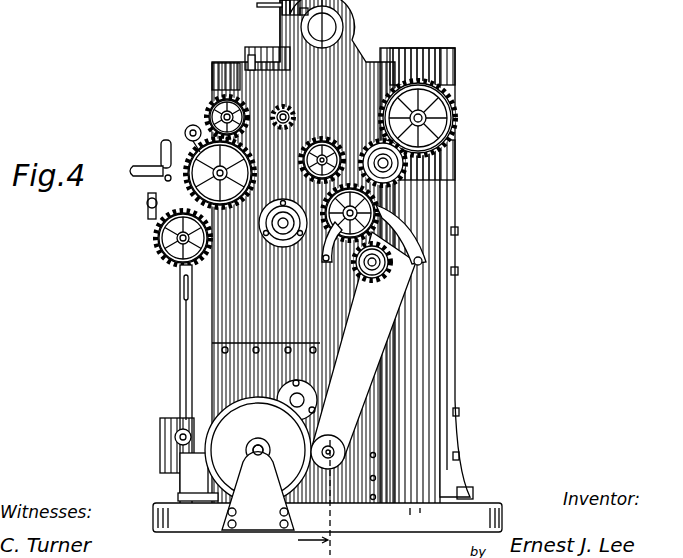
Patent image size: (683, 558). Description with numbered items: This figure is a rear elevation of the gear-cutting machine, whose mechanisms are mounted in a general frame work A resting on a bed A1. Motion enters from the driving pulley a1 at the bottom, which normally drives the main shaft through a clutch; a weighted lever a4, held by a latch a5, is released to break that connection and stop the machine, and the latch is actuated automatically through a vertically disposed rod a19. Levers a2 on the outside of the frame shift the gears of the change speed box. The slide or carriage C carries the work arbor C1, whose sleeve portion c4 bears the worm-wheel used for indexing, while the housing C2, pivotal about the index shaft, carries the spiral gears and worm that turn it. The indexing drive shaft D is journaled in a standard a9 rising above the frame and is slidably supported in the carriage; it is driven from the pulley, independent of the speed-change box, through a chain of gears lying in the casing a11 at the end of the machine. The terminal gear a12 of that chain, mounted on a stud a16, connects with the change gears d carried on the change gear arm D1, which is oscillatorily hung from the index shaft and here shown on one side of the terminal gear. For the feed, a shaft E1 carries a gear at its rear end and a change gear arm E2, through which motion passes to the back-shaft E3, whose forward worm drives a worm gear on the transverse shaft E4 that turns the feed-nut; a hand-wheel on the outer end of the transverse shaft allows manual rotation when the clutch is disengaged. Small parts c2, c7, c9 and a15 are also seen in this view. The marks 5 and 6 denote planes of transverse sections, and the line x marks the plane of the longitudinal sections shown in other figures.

The slide (carriage) C is at (333, 53).
The work arbor C1 is at (361, 6).
The housing C2 is at (242, 63).
The casing pin c2 is at (284, 16).
The sleeve portion of work arbor c4 is at (216, 78).
The casing rod c7 is at (262, 10).
The pivot pin c9 is at (166, 179).
The section line 5- 5 is at (447, 5).
The section line 6- 6 is at (219, 5).
The frame work A is at (427, 372).
The bed A1 is at (384, 524).
The driving pulley a1 is at (247, 455).
The levers a2 is at (193, 308).
The weighted lever a4 is at (180, 458).
The latch (trip device) a5 is at (175, 440).
The standard a9 is at (455, 147).
The casing a11 is at (363, 345).
The terminal gear a12 is at (392, 275).
The idler disc a15 is at (282, 232).
The stud a16 is at (392, 250).
The vertically disposed rod a19 is at (186, 376).
The indexing drive shaft D is at (428, 120).
The change gear arm D1 is at (385, 206).
The gears (change gears) d is at (425, 182).
The shaft E1 is at (212, 105).
The change gear arm E2 is at (186, 131).
The back-shaft E3 is at (158, 245).
The transverse shaft E4 is at (150, 200).
The section line x- x is at (315, 499).